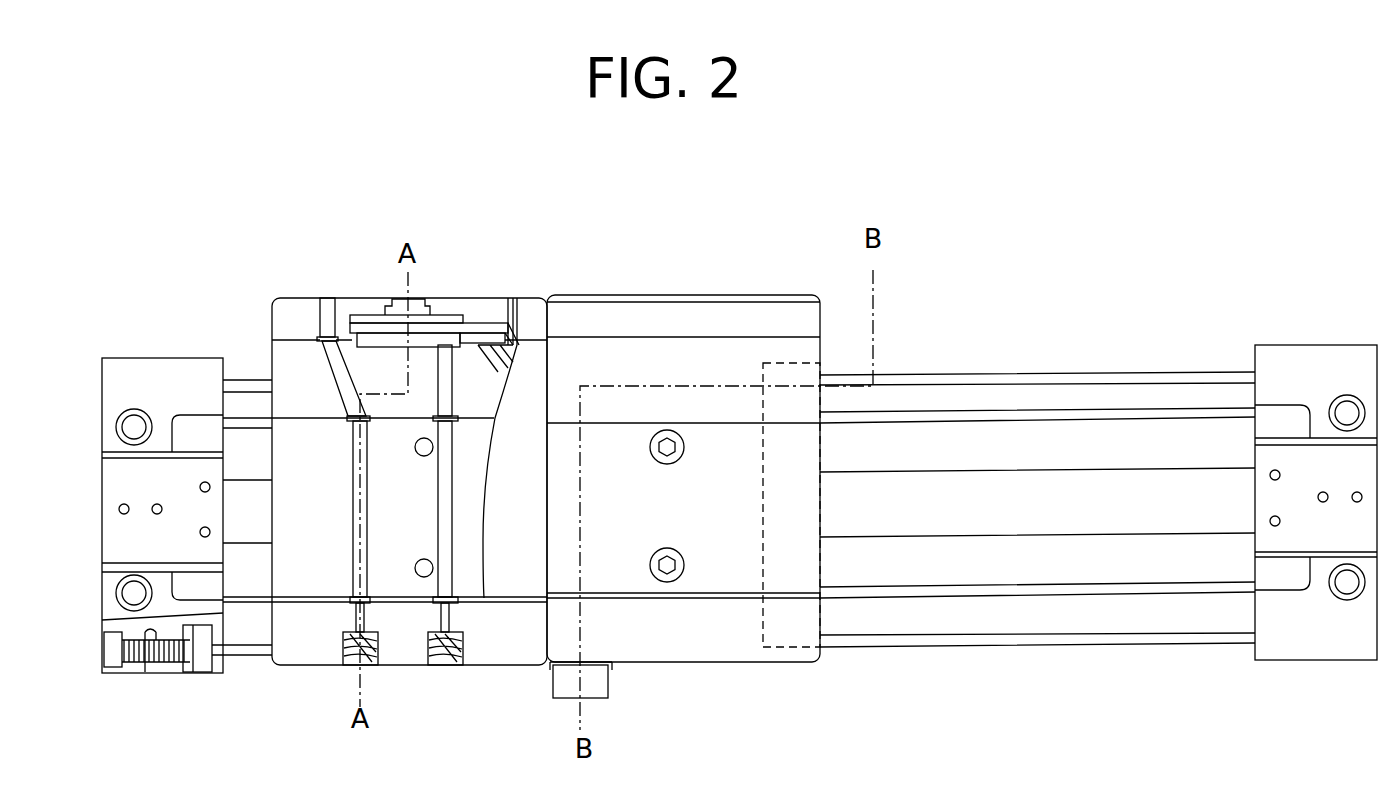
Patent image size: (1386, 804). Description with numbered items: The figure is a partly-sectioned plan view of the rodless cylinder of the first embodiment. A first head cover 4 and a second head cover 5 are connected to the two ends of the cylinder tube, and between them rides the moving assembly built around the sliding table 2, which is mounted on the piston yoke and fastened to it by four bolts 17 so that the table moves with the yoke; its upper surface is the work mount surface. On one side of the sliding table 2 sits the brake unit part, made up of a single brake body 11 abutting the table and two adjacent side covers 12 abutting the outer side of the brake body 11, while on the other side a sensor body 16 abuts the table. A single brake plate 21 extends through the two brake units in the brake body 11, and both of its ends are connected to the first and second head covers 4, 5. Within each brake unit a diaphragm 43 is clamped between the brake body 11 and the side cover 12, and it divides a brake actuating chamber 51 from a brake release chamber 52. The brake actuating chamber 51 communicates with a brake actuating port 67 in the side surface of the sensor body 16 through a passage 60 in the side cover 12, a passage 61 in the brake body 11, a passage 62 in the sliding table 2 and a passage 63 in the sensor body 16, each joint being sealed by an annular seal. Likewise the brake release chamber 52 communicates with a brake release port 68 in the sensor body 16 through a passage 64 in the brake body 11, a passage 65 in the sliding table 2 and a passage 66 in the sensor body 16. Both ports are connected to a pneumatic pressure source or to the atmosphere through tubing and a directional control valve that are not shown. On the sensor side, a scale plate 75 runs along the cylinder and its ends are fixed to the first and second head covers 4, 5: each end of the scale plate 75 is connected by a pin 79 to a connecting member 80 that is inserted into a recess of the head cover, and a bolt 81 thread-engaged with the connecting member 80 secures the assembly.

The sliding table 2 is at (296, 563).
The first head cover 4 is at (1307, 637).
The second head cover 5 is at (115, 370).
The brake body 11 is at (280, 358).
The side cover 12 is at (300, 307).
The sensor body 16 is at (330, 662).
The bolts 17 is at (685, 450).
The brake plate 21 is at (1105, 372).
The diaphragm 43 is at (440, 328).
The brake actuating chamber 51 is at (510, 338).
The brake release chamber 52 is at (511, 342).
The passage 60 is at (327, 300).
The passage 61 is at (341, 369).
The passage 62 is at (352, 480).
The passage 63 is at (356, 609).
The passage 64 is at (450, 360).
The passage 65 is at (442, 487).
The passage 66 is at (451, 609).
The brake actuating port 67 is at (366, 663).
The brake release port 68 is at (457, 666).
The scale plate 75 is at (1127, 642).
The pin 79 is at (248, 657).
The connecting member 80 is at (176, 662).
The bolt 81 is at (106, 656).